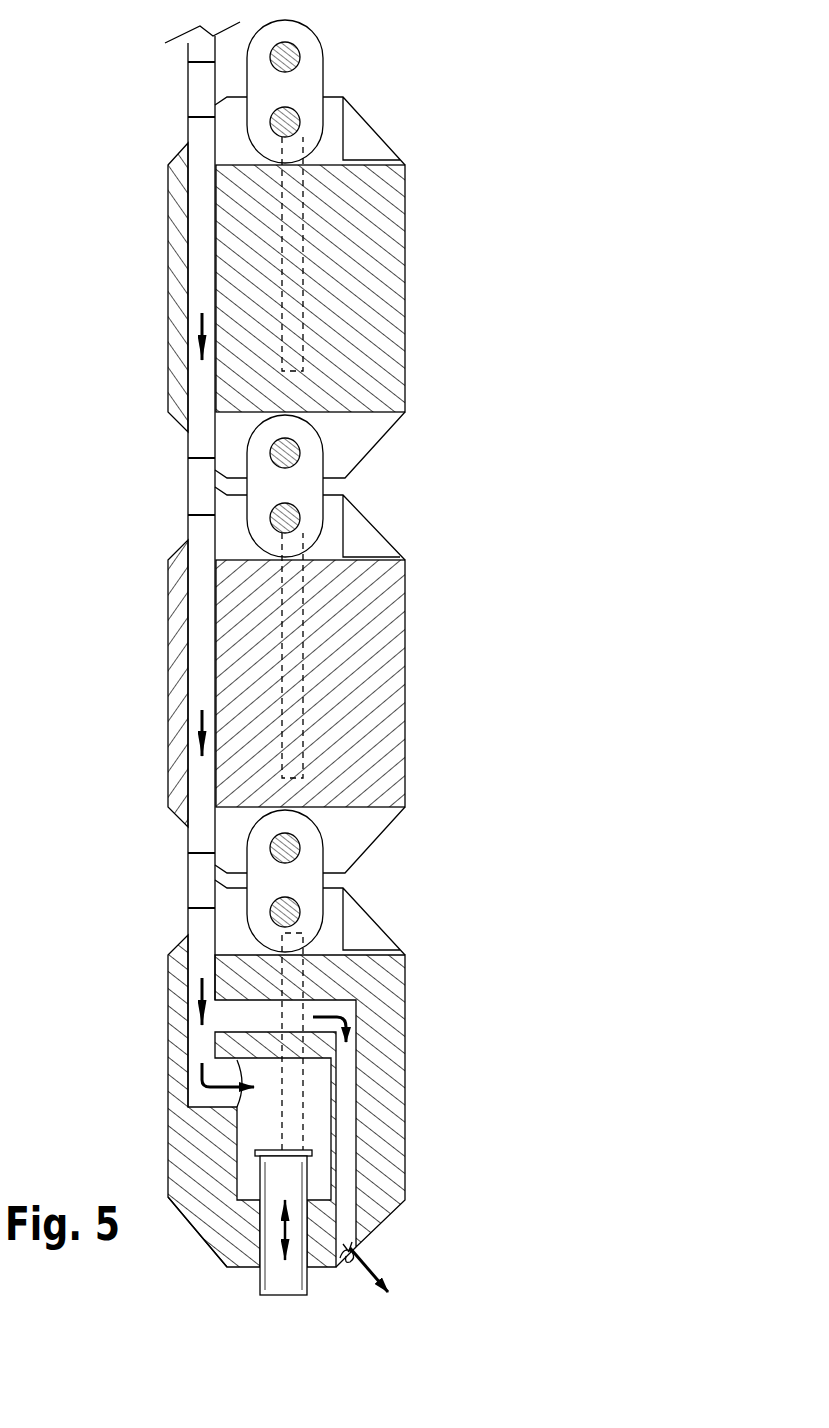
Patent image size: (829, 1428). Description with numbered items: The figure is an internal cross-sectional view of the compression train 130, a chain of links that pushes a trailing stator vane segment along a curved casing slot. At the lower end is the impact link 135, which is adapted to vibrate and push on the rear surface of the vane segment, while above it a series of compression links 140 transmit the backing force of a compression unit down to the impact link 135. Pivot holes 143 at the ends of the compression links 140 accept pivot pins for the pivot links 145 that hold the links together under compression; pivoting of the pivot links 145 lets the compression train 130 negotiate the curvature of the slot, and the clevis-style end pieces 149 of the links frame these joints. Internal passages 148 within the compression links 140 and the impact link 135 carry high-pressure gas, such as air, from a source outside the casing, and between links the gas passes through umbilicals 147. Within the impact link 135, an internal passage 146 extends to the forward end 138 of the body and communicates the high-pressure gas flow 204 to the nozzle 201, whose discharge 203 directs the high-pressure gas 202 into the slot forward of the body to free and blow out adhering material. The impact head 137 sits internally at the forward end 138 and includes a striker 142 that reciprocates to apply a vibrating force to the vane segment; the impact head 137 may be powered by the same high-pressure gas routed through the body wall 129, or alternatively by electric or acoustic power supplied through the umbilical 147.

The compression train 130 is at (57, 558).
The umbilical 147 is at (202, 101).
The internal passage 146 is at (205, 272).
The compression link 140 is at (414, 273).
The clevis end 149 is at (367, 160).
The pivot link 145 is at (323, 80).
The pivot hole 143 is at (297, 123).
The internal passage / high-pressure gas flow 148 is at (200, 325).
The impact link 135 is at (419, 1020).
The body wall 129 is at (408, 1065).
The high-pressure gas flow 204 is at (337, 1003).
The impact head 137 is at (280, 1150).
The striker 142 is at (272, 1280).
The forward end 138 is at (203, 1235).
The nozzle 201 is at (357, 1248).
The high-pressure gas 202 is at (340, 1265).
The discharge 203 is at (376, 1268).